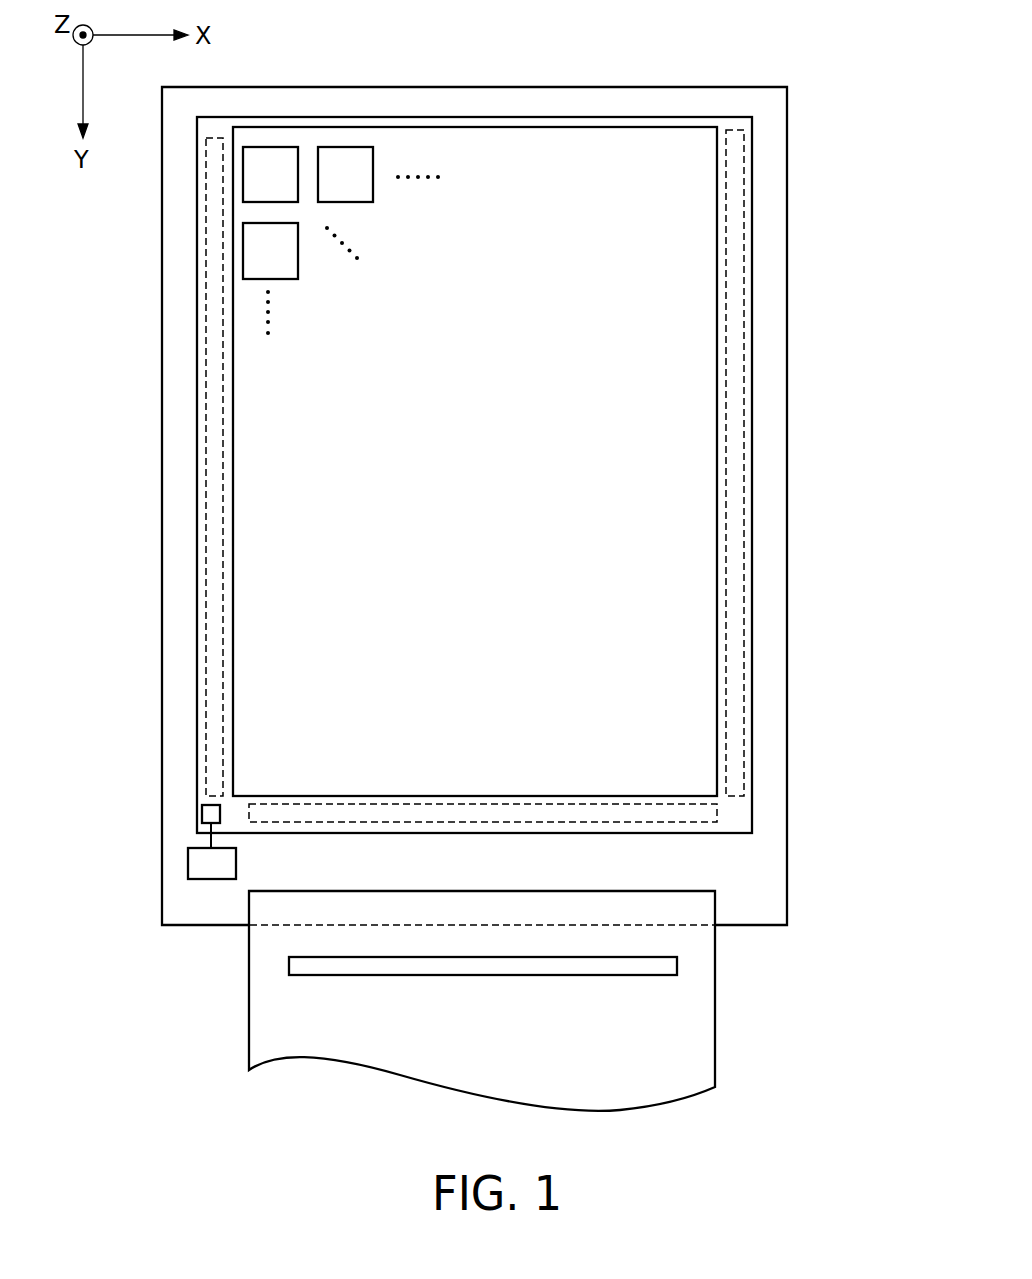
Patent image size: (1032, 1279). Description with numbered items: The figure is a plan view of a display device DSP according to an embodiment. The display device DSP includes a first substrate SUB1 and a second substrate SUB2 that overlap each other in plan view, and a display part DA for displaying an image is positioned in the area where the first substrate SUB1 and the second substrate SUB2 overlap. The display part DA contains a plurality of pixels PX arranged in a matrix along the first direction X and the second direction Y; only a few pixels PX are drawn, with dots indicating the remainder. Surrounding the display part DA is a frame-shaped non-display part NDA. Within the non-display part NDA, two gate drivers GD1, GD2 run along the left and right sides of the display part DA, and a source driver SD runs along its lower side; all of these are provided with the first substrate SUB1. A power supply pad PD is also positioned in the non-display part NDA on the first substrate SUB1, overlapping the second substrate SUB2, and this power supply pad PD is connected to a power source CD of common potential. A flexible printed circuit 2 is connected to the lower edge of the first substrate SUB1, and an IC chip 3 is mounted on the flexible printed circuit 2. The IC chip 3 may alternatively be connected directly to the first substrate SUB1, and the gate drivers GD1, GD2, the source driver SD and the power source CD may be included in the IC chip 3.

The display device DSP is at (800, 113).
The first substrate SUB1 is at (787, 893).
The second substrate SUB2 is at (752, 273).
The display part DA is at (465, 152).
The non-display part NDA is at (740, 877).
The pixel PX is at (373, 188).
The gate driver GD1 is at (205, 503).
The gate driver GD2 is at (742, 570).
The source driver SD is at (290, 822).
The power supply pad PD is at (202, 815).
The power source CD is at (212, 851).
The flexible printed circuit 2 is at (715, 1027).
The IC chip 3 is at (677, 966).